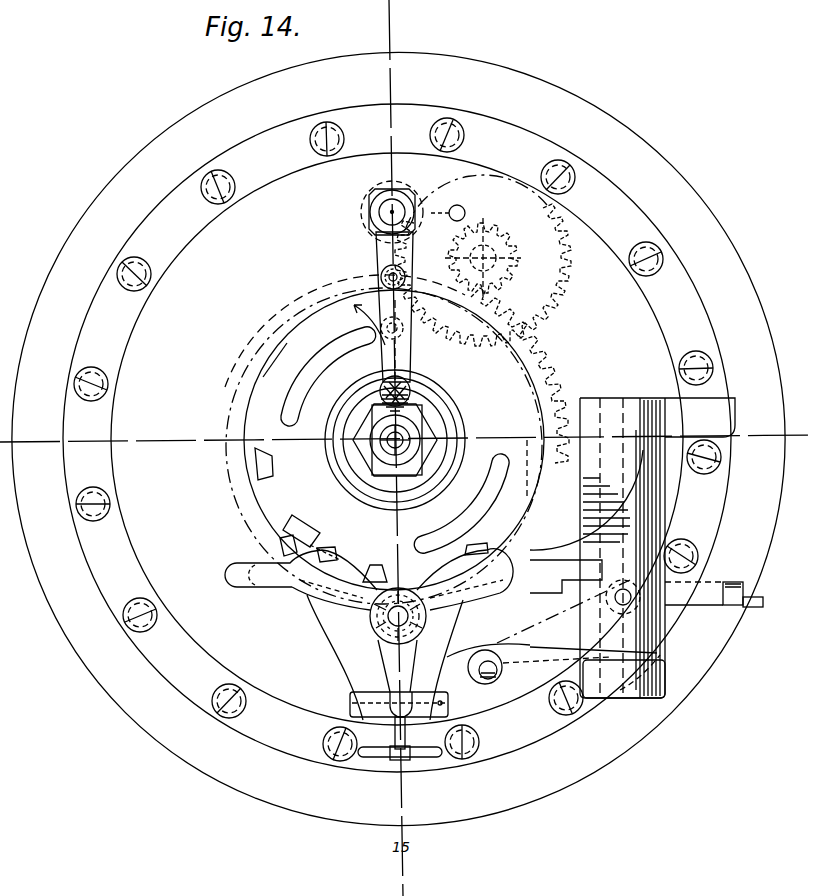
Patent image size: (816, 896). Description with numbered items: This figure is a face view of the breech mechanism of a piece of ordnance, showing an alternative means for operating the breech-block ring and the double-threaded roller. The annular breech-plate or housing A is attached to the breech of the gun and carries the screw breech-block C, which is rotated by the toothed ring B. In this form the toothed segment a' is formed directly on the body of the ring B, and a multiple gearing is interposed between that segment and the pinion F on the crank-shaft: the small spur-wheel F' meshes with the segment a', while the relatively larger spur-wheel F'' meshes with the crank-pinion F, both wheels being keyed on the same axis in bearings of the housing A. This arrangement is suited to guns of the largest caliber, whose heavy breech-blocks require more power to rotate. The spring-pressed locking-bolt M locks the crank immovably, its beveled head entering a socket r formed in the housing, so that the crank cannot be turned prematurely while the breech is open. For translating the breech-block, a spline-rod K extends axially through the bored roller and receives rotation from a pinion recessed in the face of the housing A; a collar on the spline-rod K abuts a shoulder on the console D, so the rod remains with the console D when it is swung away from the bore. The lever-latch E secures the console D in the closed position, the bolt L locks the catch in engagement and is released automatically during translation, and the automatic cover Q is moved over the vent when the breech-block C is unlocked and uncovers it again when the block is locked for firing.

The annular breech-plate or housing A is at (398, 438).
The toothed ring B is at (395, 440).
The screw breech-block C is at (385, 446).
The console D is at (494, 559).
The lever-latch E is at (410, 700).
The pinion F is at (379, 212).
The small spur-wheel F' is at (490, 259).
The larger spur-wheel F'' is at (496, 260).
The spline-rod K is at (430, 625).
The bolt for locking the catch L is at (399, 692).
The locking-bolt M is at (381, 276).
The automatic vent cover Q is at (411, 392).
The toothed segment a' is at (397, 387).
The lever arm n is at (346, 396).
The socket r is at (461, 206).